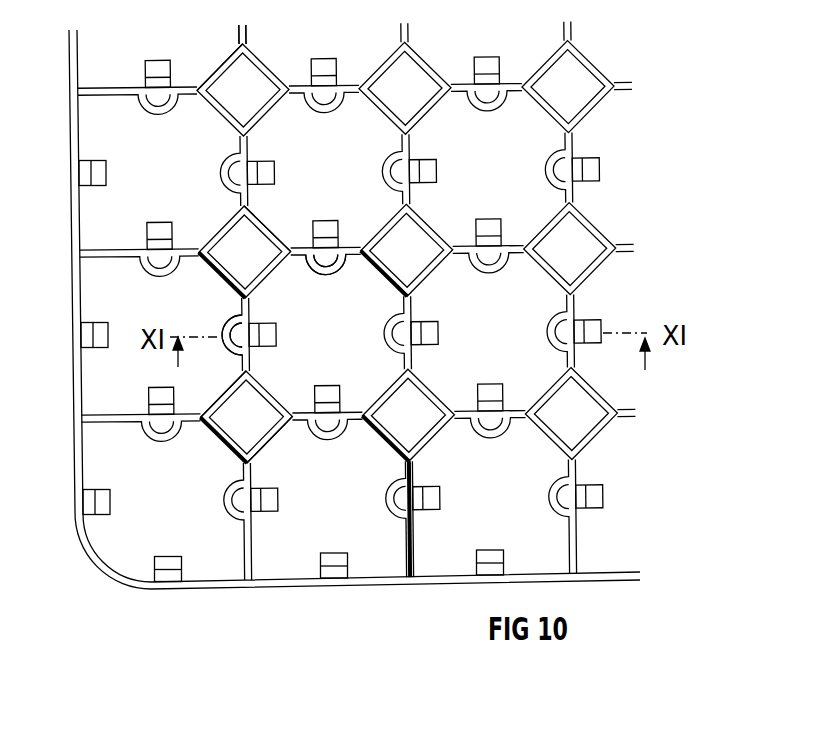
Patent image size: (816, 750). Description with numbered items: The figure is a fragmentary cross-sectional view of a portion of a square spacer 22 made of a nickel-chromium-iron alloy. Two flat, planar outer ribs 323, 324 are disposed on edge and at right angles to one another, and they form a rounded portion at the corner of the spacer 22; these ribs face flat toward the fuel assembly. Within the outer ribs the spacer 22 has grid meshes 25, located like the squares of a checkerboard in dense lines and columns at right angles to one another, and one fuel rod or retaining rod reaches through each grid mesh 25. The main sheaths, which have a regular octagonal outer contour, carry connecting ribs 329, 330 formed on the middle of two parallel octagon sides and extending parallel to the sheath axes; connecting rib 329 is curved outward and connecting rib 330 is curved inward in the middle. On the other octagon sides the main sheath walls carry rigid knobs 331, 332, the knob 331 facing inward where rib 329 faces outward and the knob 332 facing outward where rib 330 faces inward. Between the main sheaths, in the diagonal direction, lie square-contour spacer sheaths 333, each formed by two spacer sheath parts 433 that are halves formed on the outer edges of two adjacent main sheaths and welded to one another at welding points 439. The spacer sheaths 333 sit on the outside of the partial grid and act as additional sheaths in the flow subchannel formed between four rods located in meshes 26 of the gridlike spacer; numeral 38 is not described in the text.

The spacer 22 is at (98, 561).
The grid meshes 25 is at (103, 227).
The meshes 26 is at (396, 307).
The clip 38 is at (488, 383).
The outer rib 323 is at (340, 590).
The outer rib 324 is at (80, 382).
The connecting rib 329 is at (332, 222).
The connecting rib 330 is at (331, 382).
The rigid knob 331 is at (331, 276).
The rigid knob 332 is at (226, 324).
The spacer sheath 333 is at (262, 240).
The spacer sheath part 433 is at (228, 52).
The welding point 439 is at (270, 111).